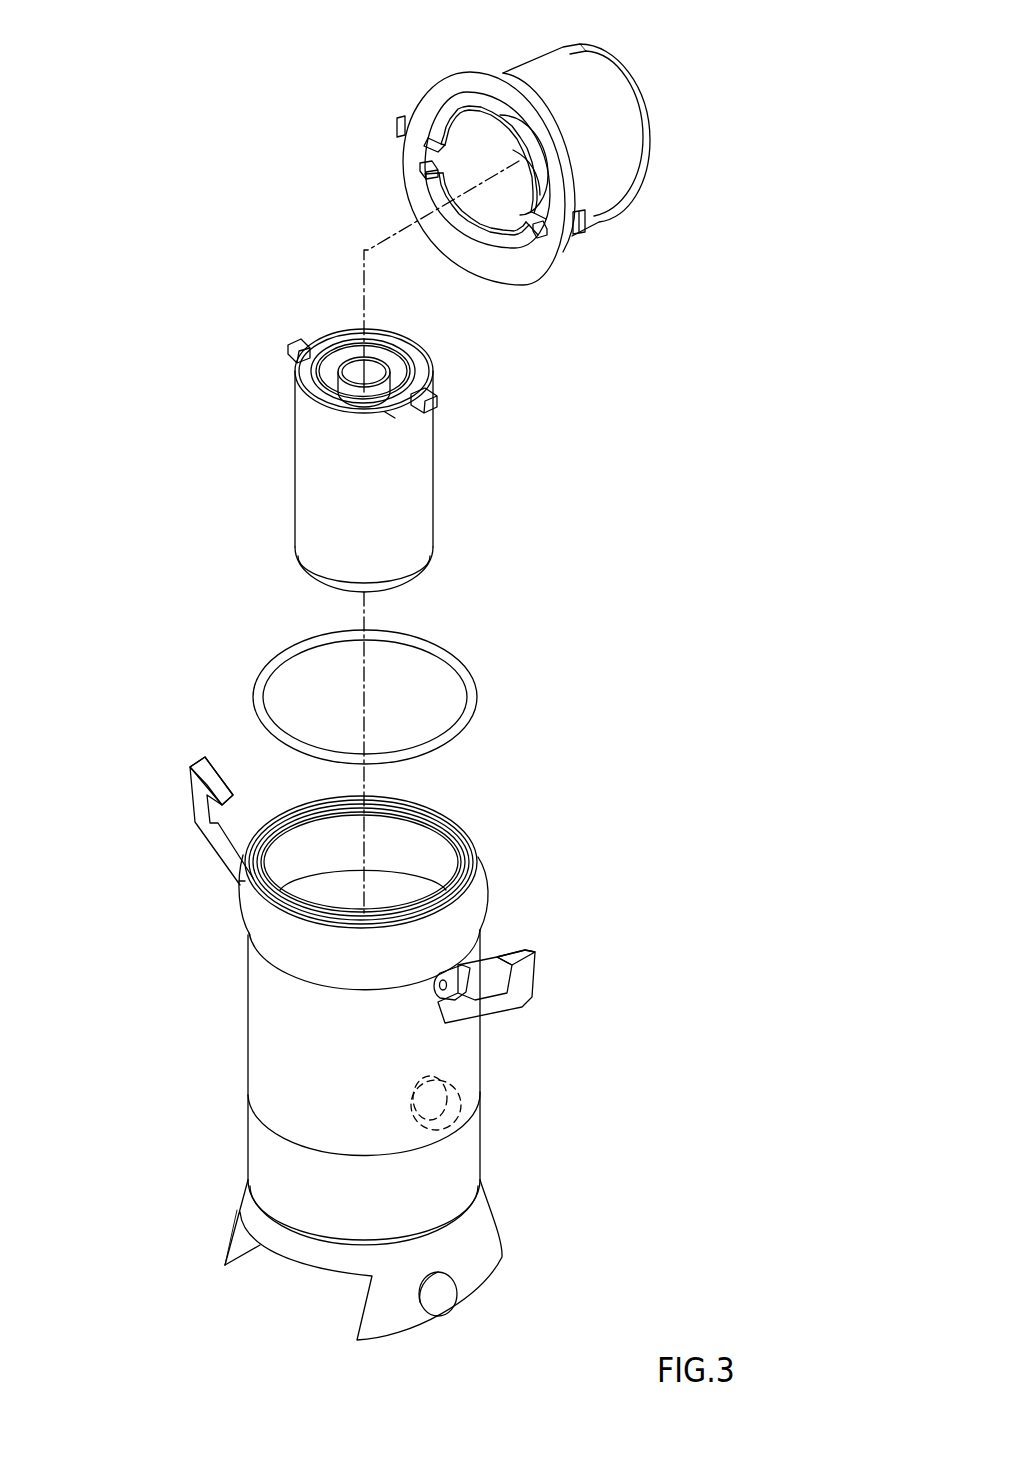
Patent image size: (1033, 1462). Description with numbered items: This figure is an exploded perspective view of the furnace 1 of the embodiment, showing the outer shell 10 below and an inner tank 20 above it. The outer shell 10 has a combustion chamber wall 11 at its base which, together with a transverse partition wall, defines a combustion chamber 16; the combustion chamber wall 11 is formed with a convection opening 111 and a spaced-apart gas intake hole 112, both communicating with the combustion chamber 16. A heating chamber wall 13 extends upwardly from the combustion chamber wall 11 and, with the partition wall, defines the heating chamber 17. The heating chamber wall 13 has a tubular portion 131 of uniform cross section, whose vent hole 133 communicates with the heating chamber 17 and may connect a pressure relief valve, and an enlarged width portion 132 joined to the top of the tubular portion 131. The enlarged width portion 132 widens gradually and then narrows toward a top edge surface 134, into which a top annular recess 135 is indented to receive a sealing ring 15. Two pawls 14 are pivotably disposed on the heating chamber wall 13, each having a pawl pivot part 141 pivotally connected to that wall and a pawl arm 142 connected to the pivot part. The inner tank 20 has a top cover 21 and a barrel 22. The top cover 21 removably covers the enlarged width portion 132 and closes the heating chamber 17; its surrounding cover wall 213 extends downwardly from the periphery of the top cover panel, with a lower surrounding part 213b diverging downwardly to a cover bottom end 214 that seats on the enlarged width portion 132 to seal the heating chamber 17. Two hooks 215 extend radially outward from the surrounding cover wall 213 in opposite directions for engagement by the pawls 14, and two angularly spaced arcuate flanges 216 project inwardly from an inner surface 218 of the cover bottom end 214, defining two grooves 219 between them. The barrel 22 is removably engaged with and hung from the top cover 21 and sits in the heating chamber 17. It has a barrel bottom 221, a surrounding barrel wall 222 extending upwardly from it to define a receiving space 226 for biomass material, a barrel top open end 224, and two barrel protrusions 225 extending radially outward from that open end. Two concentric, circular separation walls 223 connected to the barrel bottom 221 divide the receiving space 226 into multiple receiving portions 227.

The filter assembly 1 is at (658, 508).
The outer shell 10 is at (674, 980).
The combustion chamber wall 11 is at (492, 1267).
The convection opening 111 is at (242, 1238).
The gas intake hole 112 is at (443, 1305).
The heating chamber wall 13 is at (258, 1008).
The tubular portion 131 is at (263, 1058).
The enlarged width portion 132 is at (258, 920).
The vent hole 133 is at (460, 1097).
The top edge surface 134 is at (245, 882).
The top annular recess 135 is at (465, 840).
The pawl 14 is at (200, 752).
The pawl pivot part 141 is at (460, 975).
The pawl arm 142 is at (190, 815).
The sealing ring 15 is at (450, 662).
The combustion chamber 16 is at (282, 1282).
The heating chamber 17 is at (425, 835).
The inner tank 20 is at (634, 280).
The top cover 21 is at (650, 132).
The surrounding cover wall 213 is at (623, 163).
The lower surrounding part 213b is at (580, 182).
The cover bottom end 214 is at (428, 95).
The hook 215 is at (396, 125).
The arcuate flange 216 is at (433, 118).
The inner surface 218 is at (464, 127).
The groove 219 is at (420, 166).
The barrel 22 is at (418, 483).
The barrel bottom 221 is at (375, 590).
The surrounding barrel wall 222 is at (305, 512).
The separation wall 223 is at (350, 362).
The barrel top open end 224 is at (393, 418).
The barrel protrusion 225 is at (303, 343).
The receiving space 226 is at (178, 330).
The receiving portion 227 is at (322, 358).